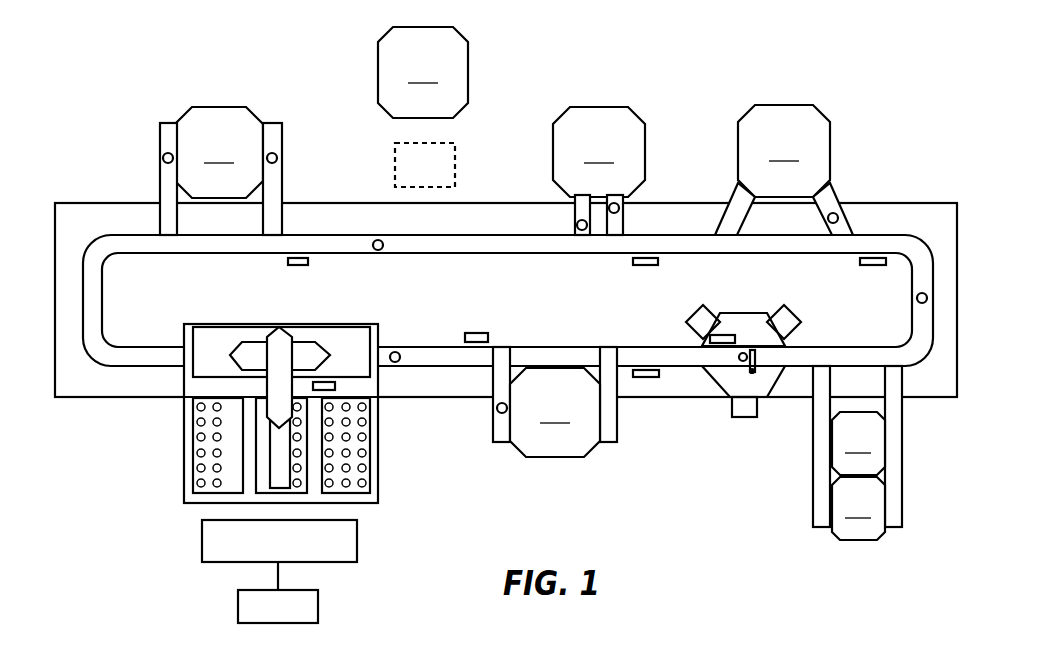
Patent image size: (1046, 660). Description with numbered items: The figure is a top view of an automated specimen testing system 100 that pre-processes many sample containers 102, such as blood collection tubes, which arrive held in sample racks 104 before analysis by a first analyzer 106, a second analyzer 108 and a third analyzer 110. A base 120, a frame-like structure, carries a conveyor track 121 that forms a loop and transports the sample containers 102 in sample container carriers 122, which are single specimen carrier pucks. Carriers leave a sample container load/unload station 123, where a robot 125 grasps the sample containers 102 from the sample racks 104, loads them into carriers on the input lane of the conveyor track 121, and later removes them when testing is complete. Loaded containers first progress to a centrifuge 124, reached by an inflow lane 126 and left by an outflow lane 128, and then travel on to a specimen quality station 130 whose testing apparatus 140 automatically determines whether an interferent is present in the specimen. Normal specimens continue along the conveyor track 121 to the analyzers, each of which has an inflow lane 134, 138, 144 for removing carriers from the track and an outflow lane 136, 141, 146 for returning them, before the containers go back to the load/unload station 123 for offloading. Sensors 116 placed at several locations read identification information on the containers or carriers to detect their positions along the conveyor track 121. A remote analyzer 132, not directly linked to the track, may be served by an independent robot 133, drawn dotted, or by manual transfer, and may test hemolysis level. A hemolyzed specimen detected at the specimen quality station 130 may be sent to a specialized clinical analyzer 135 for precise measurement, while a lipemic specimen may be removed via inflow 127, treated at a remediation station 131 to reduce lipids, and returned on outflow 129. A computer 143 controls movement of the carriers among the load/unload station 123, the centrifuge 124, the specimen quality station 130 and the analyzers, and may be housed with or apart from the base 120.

The automated specimen testing system 100 is at (172, 46).
The sample container 102 is at (350, 486).
The sample rack 104 is at (371, 457).
The first analyzer 106 is at (784, 151).
The second analyzer 108 is at (599, 152).
The third analyzer 110 is at (219, 152).
The sensor 116 is at (308, 262).
The base 120 is at (83, 203).
The conveyor track 121 is at (103, 295).
The sample container carrier 122 is at (384, 248).
The sample container load/unload station 123 is at (170, 478).
The centrifuge 124 is at (555, 412).
The robot 125 is at (215, 365).
The inflow lane 126 is at (493, 425).
The inflow 127 is at (813, 438).
The outflow lane 128 is at (617, 425).
The outflow 129 is at (902, 438).
The specimen quality station 130 is at (740, 438).
The remediation station 131 is at (858, 443).
The remote analyzer 132 is at (423, 72).
The independent robot 133 is at (455, 156).
The inflow lane 134 is at (837, 193).
The specialized clinical analyzer 135 is at (858, 508).
The outflow lane 136 is at (733, 193).
The inflow lane 138 is at (623, 200).
The testing apparatus 140 is at (742, 304).
The outflow lane 141 is at (575, 200).
The computer 143 is at (202, 540).
The inflow lane 144 is at (283, 190).
The outflow lane 146 is at (158, 190).